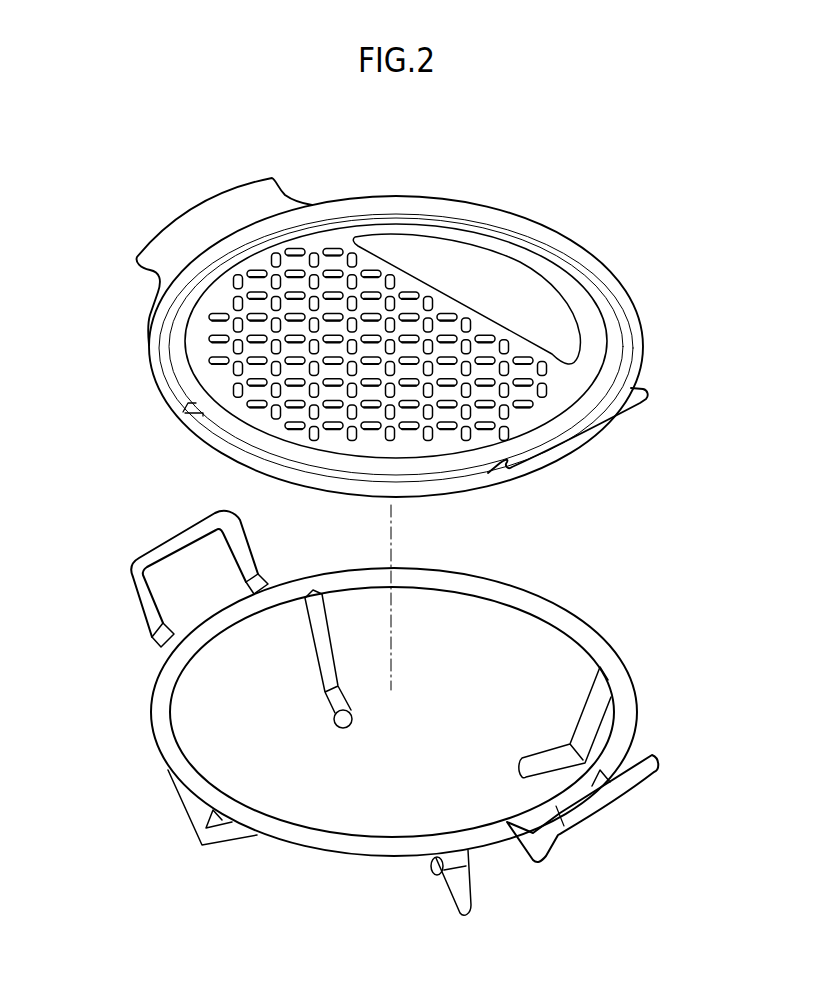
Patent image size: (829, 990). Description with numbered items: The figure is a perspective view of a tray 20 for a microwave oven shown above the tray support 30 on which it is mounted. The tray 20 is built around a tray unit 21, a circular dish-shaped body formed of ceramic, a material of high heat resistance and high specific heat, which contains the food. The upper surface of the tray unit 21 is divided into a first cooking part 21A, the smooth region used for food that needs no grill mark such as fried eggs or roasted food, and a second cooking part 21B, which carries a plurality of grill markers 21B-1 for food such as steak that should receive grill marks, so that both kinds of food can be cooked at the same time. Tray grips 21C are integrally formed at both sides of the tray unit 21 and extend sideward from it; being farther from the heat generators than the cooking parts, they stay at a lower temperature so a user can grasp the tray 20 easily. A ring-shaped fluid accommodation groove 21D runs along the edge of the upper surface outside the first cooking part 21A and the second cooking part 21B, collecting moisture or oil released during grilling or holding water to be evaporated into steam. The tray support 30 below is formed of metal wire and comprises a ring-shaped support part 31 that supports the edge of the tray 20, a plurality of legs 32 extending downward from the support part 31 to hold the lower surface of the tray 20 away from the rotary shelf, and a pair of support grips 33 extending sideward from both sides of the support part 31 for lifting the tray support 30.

The tray for a microwave oven 20 is at (378, 318).
The tray unit 21 is at (485, 214).
The first cooking part 21A is at (428, 262).
The second cooking part 21B is at (335, 258).
The grill markers 21B-1 is at (208, 318).
The tray grips 21C is at (187, 226).
The fluid accommodation groove 21D is at (183, 412).
The tray support 30 is at (391, 720).
The support part 31 is at (597, 647).
The legs 32 is at (537, 760).
The support grips 33 is at (142, 600).